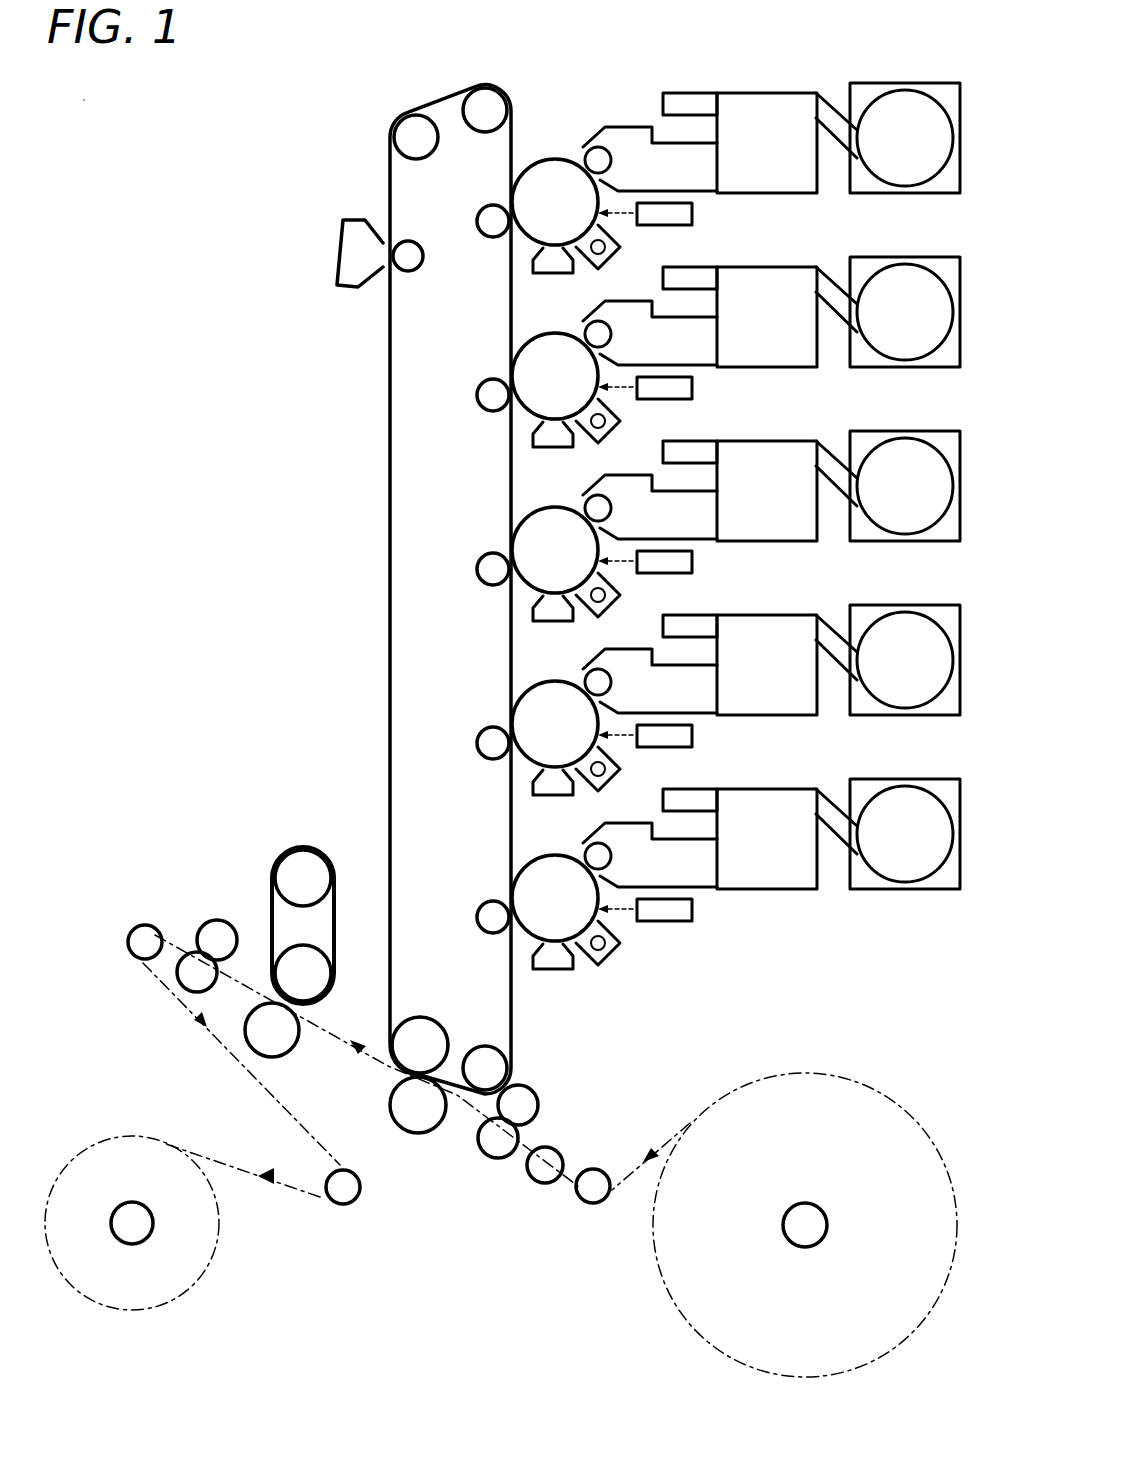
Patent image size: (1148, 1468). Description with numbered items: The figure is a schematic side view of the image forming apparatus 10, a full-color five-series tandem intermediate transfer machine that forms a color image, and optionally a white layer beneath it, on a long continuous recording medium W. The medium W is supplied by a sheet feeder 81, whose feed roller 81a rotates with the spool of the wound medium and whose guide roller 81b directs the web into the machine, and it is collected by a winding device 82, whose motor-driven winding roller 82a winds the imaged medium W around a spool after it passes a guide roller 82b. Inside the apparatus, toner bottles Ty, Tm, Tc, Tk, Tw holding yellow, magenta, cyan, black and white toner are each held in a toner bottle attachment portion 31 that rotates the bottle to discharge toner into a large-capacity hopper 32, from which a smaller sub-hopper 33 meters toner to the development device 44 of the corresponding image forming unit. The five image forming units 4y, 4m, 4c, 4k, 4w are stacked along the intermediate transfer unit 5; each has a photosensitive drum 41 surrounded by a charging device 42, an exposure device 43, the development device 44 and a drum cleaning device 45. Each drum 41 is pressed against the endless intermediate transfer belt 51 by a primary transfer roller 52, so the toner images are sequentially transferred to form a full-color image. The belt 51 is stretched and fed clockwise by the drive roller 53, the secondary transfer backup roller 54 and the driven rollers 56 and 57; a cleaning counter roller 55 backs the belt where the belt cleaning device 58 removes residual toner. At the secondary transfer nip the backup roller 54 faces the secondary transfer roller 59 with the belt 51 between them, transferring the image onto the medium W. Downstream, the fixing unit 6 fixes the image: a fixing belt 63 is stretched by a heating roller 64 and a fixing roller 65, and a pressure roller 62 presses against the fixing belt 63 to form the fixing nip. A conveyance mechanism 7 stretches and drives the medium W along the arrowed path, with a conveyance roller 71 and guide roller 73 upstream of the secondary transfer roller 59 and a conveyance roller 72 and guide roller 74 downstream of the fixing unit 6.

The image forming apparatus 10 is at (115, 145).
The intermediate transfer unit 5 is at (390, 103).
The intermediate transfer belt 51 is at (388, 368).
The primary transfer roller 52 is at (480, 210).
The drive roller 53 is at (505, 1050).
The secondary transfer backup roller 54 is at (400, 1015).
The cleaning counter roller 55 is at (423, 262).
The driven roller 56 is at (400, 150).
The driven roller 57 is at (467, 98).
The belt cleaning device 58 is at (336, 236).
The secondary transfer roller 59 is at (432, 1128).
The image forming unit 4y is at (517, 128).
The image forming unit 4m is at (517, 302).
The image forming unit 4c is at (517, 476).
The image forming unit 4k is at (517, 651).
The image forming unit 4w is at (750, 1000).
The photosensitive drum 41 is at (548, 855).
The charging device 42 is at (614, 953).
The exposure device 43 is at (678, 923).
The development device 44 is at (703, 893).
The drum cleaning device 45 is at (576, 962).
The toner bottle attachment portion 31 is at (852, 84).
The hopper 32 is at (782, 92).
The sub-hopper 33 is at (714, 92).
The toner bottle Ty is at (925, 83).
The toner bottle Tm is at (925, 257).
The toner bottle Tc is at (925, 431).
The toner bottle Tk is at (925, 605).
The toner bottle Tw is at (925, 779).
The fixing unit 6 is at (276, 829).
The pressure roller 62 is at (298, 1045).
The fixing belt 63 is at (272, 890).
The heating roller 64 is at (320, 910).
The fixing roller 65 is at (280, 955).
The conveyance mechanism 7 is at (128, 903).
The conveyance roller 71 is at (532, 1093).
The conveyance roller 72 is at (203, 925).
The guide roller 73 is at (535, 1180).
The guide roller 74 is at (162, 980).
The recording medium W is at (650, 1150).
The sheet feeder 81 is at (830, 1058).
The feed roller 81a is at (825, 1202).
The guide roller 81b is at (600, 1168).
The winding device 82 is at (111, 1109).
The winding roller 82a is at (120, 1203).
The guide roller 82b is at (326, 1178).